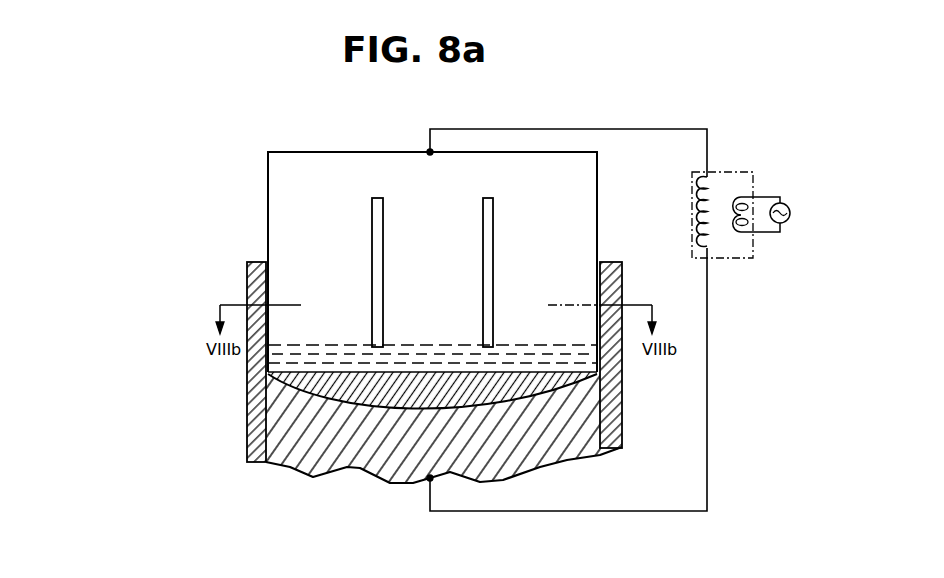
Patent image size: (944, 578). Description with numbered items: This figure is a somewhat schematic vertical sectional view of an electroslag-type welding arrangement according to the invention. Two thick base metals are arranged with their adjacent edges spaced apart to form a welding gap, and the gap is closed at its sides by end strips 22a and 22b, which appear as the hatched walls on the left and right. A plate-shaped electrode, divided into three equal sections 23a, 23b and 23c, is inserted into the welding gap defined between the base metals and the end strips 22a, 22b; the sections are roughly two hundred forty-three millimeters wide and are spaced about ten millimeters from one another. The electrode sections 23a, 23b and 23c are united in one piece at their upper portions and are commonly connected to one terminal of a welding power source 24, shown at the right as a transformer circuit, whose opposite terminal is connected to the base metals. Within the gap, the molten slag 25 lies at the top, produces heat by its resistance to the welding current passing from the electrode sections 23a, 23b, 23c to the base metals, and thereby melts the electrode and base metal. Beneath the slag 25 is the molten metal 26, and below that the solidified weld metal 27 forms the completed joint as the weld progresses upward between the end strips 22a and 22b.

The end strip 22a is at (247, 402).
The end strip 22b is at (622, 412).
The electrode section 23a is at (343, 223).
The electrode section 23b is at (455, 223).
The electrode section 23c is at (562, 223).
The welding power source 24 is at (731, 261).
The molten slag 25 is at (597, 363).
The molten metal 26 is at (598, 428).
The solidified weld metal 27 is at (567, 457).